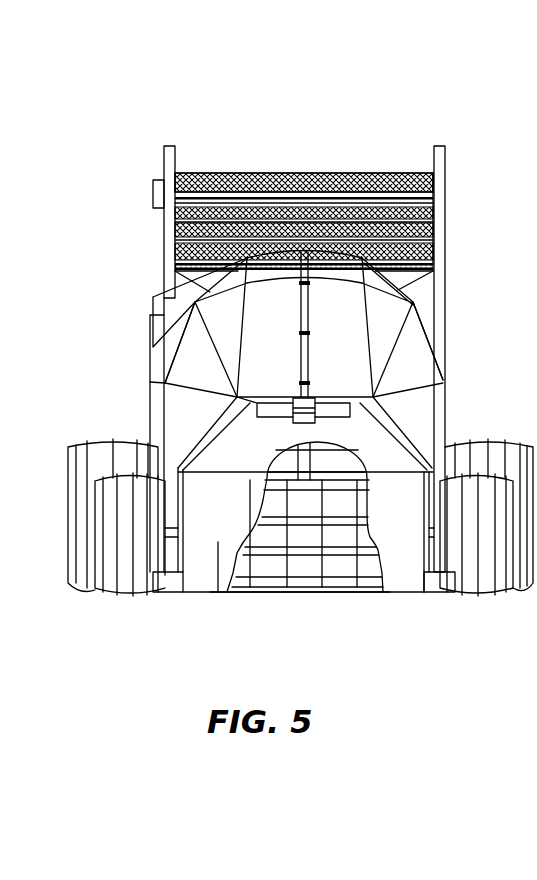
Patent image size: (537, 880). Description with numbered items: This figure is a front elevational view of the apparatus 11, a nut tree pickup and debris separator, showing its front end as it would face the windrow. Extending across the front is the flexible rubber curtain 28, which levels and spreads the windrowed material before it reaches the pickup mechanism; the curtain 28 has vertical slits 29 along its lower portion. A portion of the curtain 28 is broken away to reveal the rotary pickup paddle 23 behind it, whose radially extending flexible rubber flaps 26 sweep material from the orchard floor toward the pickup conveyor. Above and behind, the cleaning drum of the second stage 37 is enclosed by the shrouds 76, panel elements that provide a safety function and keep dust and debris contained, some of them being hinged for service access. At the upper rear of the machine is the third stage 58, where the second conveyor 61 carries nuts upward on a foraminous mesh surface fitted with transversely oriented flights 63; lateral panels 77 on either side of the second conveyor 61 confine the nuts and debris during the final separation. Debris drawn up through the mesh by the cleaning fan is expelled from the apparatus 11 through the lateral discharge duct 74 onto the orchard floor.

The apparatus 11 is at (362, 90).
The third stage 58 is at (248, 162).
The second conveyor 61 is at (392, 165).
The lateral panels 77 is at (445, 177).
The flights 63 is at (433, 228).
The lateral discharge duct 74 is at (153, 301).
The second stage 37 is at (138, 332).
The shrouds 76 is at (170, 353).
The flexible rubber curtain 28 is at (392, 467).
The vertical slits 29 is at (218, 565).
The flexible rubber flaps 26 is at (337, 567).
The rotary pickup paddle 23 is at (268, 600).